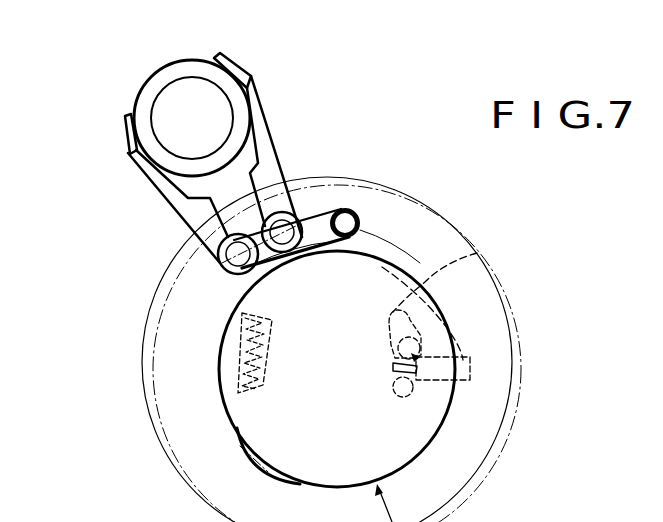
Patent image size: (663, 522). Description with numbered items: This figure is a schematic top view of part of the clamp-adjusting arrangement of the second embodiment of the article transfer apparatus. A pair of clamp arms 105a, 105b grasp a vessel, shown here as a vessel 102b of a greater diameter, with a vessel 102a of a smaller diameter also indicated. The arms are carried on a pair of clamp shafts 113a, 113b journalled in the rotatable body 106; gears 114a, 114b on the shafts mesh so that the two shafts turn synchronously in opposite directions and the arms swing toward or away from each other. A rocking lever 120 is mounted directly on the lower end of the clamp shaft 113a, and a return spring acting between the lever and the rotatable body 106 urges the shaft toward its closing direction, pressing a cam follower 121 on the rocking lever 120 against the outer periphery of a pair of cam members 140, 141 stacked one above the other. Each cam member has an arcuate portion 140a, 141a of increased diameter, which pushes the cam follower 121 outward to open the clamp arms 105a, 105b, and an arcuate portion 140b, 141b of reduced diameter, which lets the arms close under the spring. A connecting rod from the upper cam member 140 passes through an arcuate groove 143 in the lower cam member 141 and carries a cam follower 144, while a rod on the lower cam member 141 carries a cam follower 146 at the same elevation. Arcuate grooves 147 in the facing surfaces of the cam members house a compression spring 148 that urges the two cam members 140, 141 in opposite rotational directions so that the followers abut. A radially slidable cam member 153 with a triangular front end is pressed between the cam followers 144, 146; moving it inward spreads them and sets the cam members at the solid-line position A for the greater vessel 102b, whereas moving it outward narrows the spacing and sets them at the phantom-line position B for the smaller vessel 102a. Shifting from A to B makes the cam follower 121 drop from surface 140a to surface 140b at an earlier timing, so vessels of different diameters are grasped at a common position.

The vessel of a smaller diameter 102a is at (197, 80).
The vessel of a greater diameter 102b is at (176, 59).
The clamp arm 105a is at (250, 73).
The clamp arm 105b is at (127, 118).
The rotatable body 106 is at (375, 183).
The clamp shaft 113a is at (282, 220).
The clamp shaft 113b is at (236, 254).
The gear 114a is at (322, 213).
The gear 114b is at (240, 280).
The rocking lever 120 is at (327, 238).
The cam follower 121 is at (361, 217).
The upper cam member 140 is at (425, 270).
The arcuate portion of an increased diameter 140a is at (440, 425).
The arcuate portion of a reduced diameter 140b is at (296, 411).
The lower cam member 141 is at (254, 470).
The arcuate portion of an increased diameter 141a is at (274, 475).
The arcuate portion of a reduced diameter 141b is at (480, 253).
The arcuate groove 143 is at (412, 312).
The cam follower 144 is at (420, 345).
The cam follower 146 is at (403, 397).
The arcuate grooves 147 is at (236, 368).
The compression spring 148 is at (235, 394).
The cam member 153 is at (470, 377).
The solid line position A is at (386, 247).
The phantom line position B is at (380, 264).